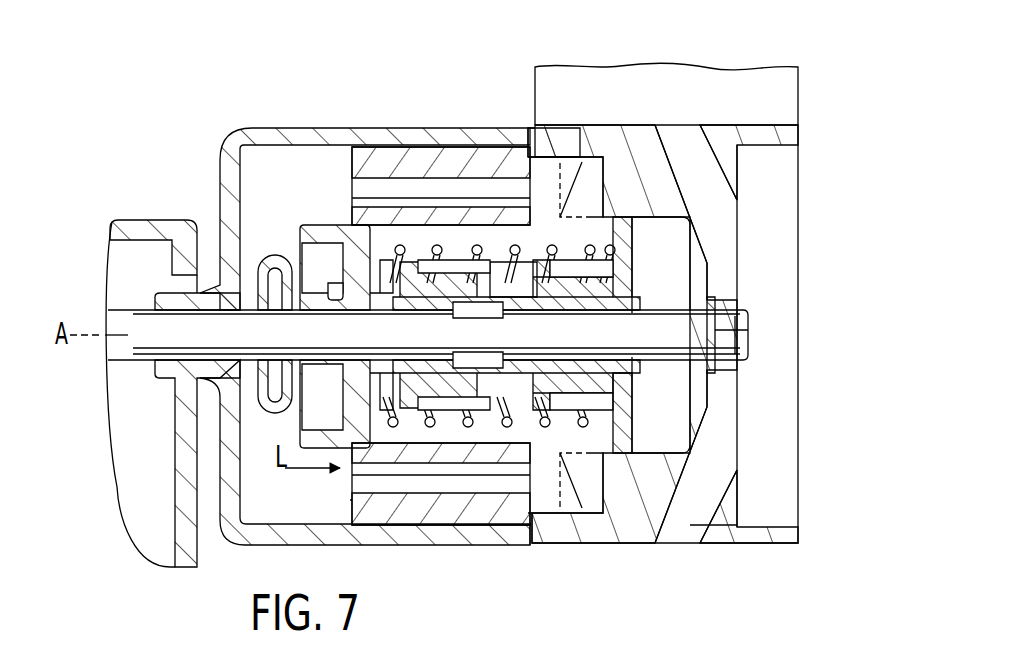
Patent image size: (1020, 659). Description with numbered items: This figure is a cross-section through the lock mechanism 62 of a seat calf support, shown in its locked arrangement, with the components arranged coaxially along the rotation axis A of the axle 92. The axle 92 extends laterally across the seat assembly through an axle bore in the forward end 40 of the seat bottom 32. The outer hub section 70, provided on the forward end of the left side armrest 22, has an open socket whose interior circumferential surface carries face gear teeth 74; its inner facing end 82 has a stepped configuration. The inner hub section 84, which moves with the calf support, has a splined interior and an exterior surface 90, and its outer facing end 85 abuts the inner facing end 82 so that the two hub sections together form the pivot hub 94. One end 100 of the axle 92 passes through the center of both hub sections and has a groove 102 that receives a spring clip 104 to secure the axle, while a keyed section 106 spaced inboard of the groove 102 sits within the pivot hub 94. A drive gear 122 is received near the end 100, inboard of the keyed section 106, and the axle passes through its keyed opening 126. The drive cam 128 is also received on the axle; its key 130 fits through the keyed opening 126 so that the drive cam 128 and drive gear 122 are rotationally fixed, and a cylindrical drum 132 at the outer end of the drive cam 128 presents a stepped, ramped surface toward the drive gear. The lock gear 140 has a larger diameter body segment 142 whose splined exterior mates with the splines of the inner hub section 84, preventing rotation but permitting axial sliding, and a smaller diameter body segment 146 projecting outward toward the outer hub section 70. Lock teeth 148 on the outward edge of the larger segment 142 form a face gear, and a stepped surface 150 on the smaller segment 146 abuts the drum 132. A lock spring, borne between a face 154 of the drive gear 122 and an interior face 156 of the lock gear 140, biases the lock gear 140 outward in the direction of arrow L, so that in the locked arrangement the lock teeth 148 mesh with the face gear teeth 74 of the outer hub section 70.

The left side armrest 22 is at (765, 67).
The seat bottom 32 is at (100, 255).
The forward end 40 is at (150, 228).
The lock mechanism 62 is at (834, 186).
The outer hub section 70 is at (686, 137).
The face gear teeth 74 is at (652, 216).
The inner facing end 82 is at (526, 546).
The inner hub section 84 is at (343, 136).
The outer facing end 85 is at (538, 142).
The exterior surface 90 is at (273, 127).
The axle 92 is at (126, 338).
The pivot hub 94 is at (609, 123).
The end of the axle 100 is at (742, 322).
The groove 102 is at (713, 340).
The spring clip 104 is at (716, 300).
The keyed section 106 is at (462, 308).
The drive gear 122 is at (332, 228).
The keyed opening 126 is at (357, 297).
The drive cam 128 is at (584, 306).
The key 130 is at (327, 284).
The drum 132 is at (650, 213).
The lock gear 140 is at (345, 500).
The larger diameter body segment 142 is at (465, 526).
The smaller diameter body segment 146 is at (692, 548).
The lock teeth 148 is at (580, 190).
The stepped surface 150 is at (440, 246).
The face of the drive gear 154 is at (380, 292).
The interior face 156 is at (608, 382).